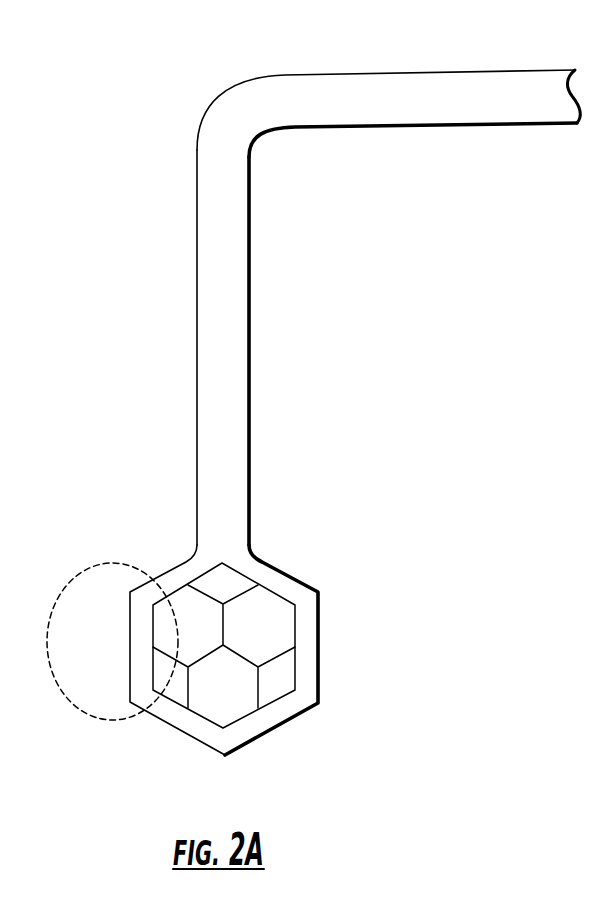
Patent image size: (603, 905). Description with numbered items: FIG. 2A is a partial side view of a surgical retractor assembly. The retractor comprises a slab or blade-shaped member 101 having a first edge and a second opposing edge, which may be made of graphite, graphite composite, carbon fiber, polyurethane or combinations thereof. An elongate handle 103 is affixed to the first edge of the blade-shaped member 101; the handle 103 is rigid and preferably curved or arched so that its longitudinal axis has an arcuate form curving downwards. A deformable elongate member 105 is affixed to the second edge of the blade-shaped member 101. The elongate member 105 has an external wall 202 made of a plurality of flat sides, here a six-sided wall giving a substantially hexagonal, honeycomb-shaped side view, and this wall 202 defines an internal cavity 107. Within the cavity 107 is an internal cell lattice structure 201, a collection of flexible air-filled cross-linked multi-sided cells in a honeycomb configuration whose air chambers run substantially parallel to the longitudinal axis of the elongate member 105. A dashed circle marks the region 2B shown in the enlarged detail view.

The blade-shaped member 101 is at (240, 327).
The elongate handle 103 is at (369, 113).
The deformable elongate member 105 is at (310, 649).
The internal cavity 107 is at (233, 698).
The internal cell lattice structure 201 is at (257, 637).
The external wall 202 is at (188, 722).
The detail view circle for FIG. 2B is at (63, 695).